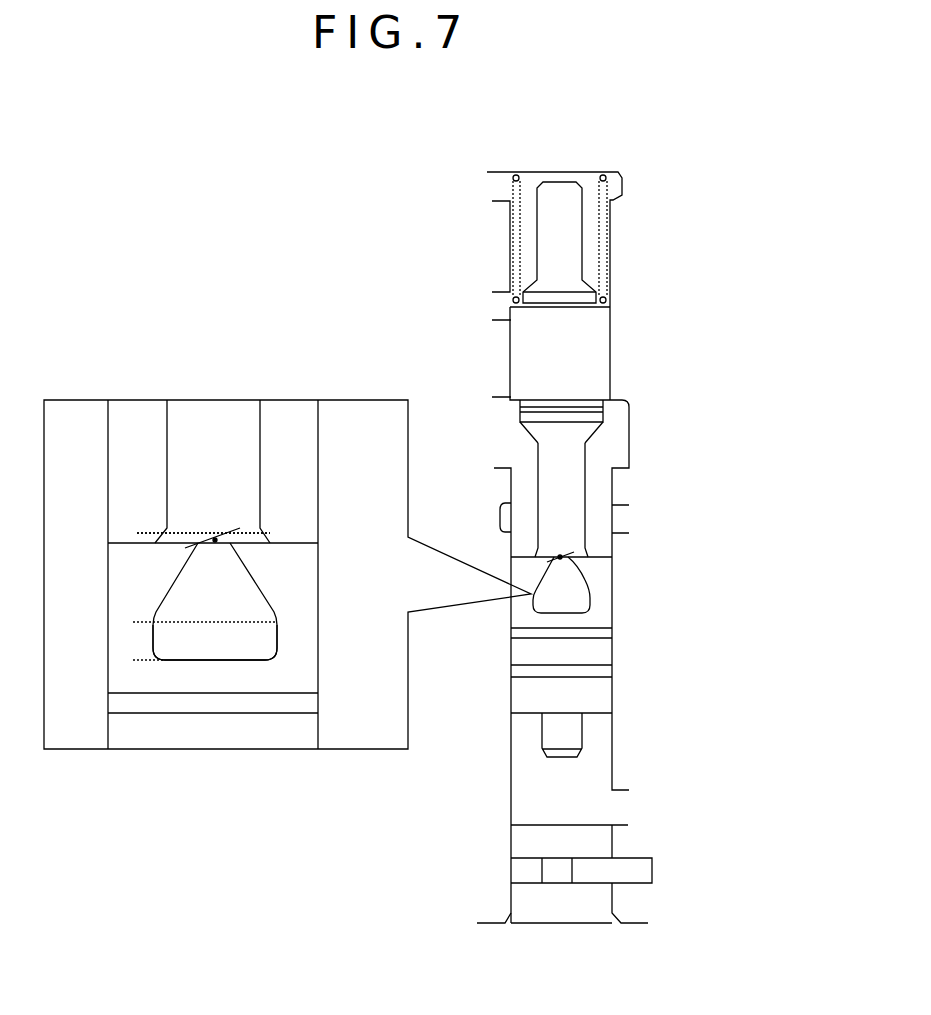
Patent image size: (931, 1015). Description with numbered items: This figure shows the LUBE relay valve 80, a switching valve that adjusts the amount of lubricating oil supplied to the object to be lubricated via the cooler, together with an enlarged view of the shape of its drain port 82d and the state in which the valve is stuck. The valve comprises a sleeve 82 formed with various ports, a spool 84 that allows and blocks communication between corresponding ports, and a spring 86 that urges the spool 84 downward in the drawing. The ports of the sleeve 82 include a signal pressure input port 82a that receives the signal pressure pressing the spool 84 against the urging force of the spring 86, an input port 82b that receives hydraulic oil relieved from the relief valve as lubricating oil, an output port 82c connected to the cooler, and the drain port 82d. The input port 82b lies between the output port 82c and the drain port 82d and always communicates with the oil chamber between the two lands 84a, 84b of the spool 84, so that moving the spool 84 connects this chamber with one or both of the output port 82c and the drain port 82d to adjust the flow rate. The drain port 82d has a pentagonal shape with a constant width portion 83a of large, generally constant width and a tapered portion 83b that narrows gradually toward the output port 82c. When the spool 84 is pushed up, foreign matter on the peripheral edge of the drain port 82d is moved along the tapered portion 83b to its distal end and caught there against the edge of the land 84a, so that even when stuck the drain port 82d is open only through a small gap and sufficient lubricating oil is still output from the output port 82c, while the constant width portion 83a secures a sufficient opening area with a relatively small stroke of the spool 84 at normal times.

The LUBE relay valve 80 is at (693, 185).
The sleeve 82 is at (511, 798).
The signal pressure input port 82a is at (617, 822).
The input port 82b is at (618, 519).
The output port 82c is at (505, 447).
The drain port 82d is at (535, 600).
The spool 84 is at (588, 266).
The land 84a is at (598, 655).
The land 84b is at (600, 436).
The spring 86 is at (513, 246).
The constant width portion 83a is at (133, 622).
The tapered portion 83b is at (133, 533).